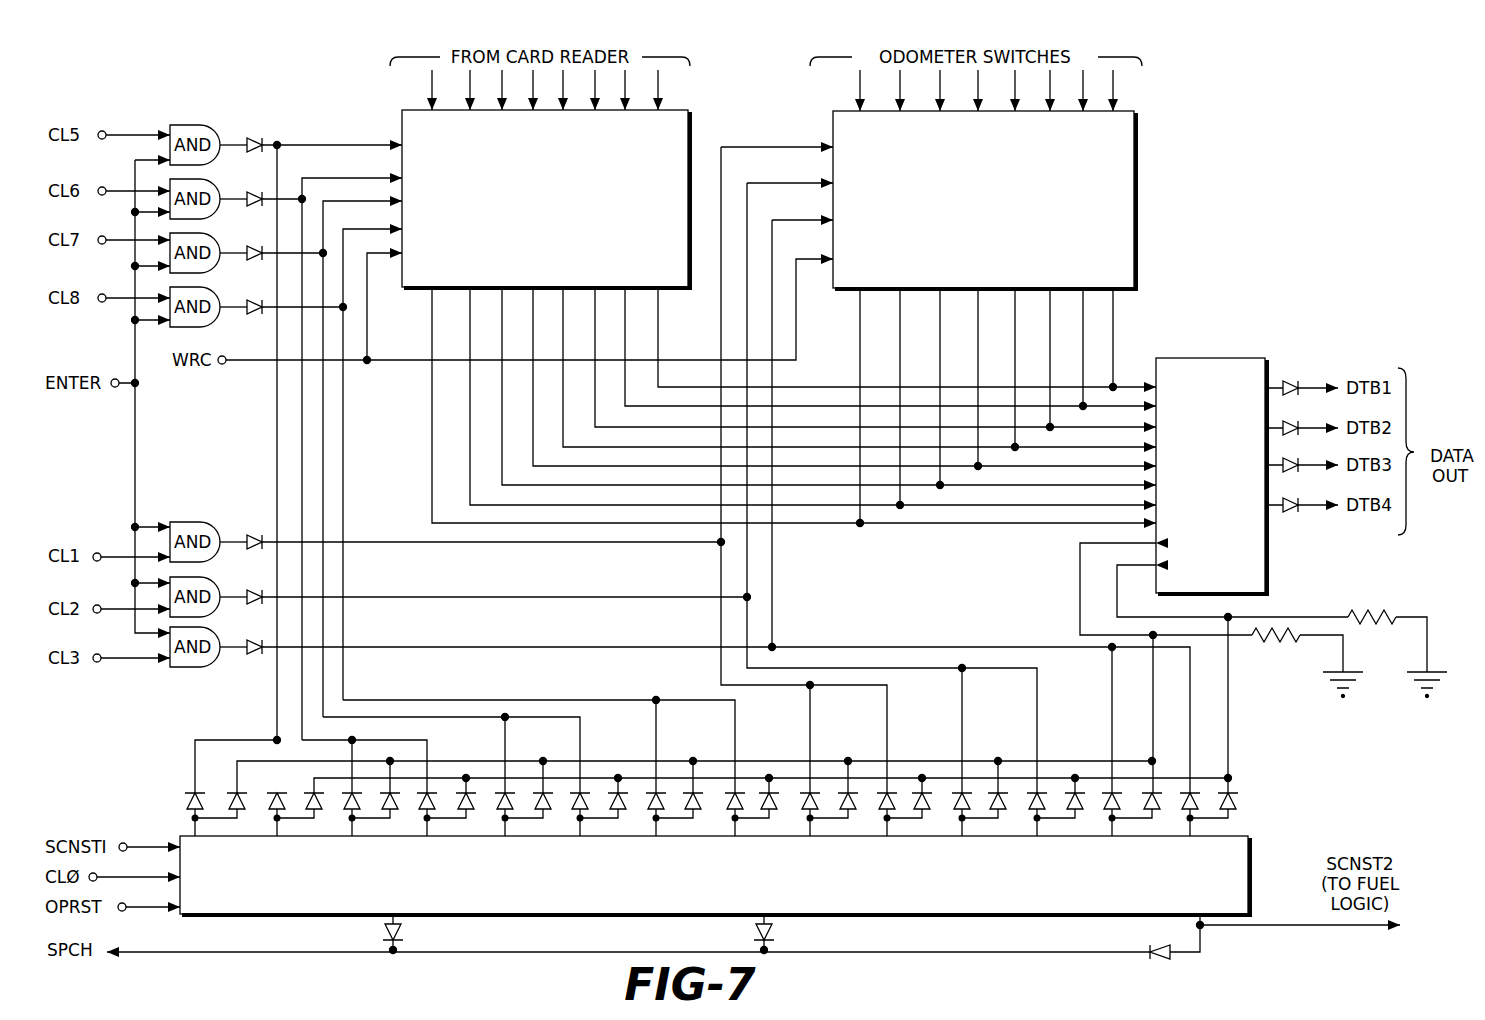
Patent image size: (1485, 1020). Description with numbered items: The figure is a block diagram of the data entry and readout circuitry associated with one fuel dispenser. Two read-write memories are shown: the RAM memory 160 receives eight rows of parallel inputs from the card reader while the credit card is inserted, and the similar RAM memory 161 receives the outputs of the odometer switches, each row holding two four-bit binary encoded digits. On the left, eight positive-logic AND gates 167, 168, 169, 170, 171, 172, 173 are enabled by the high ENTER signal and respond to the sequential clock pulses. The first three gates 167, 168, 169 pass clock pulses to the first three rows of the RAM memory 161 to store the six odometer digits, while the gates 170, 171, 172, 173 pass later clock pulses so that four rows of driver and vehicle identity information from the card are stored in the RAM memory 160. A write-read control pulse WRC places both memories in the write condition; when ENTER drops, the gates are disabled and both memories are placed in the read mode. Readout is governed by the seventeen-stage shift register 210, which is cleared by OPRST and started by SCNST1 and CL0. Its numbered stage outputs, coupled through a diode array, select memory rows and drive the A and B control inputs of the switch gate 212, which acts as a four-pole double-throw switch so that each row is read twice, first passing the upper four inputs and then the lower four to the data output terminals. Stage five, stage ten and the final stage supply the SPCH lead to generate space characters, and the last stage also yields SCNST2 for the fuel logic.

The RAM read-write memory 160 is at (690, 124).
The RAM read-write memory 161 is at (1136, 130).
The switch gate 212 is at (1205, 358).
The 17-stage shift register 210 is at (1250, 838).
The AND gate 167 is at (222, 525).
The AND gate 168 is at (222, 580).
The AND gate 169 is at (222, 630).
The AND gate 170 is at (216, 325).
The AND gate 171 is at (216, 271).
The AND gate 172 is at (216, 217).
The AND gate 173 is at (216, 163).